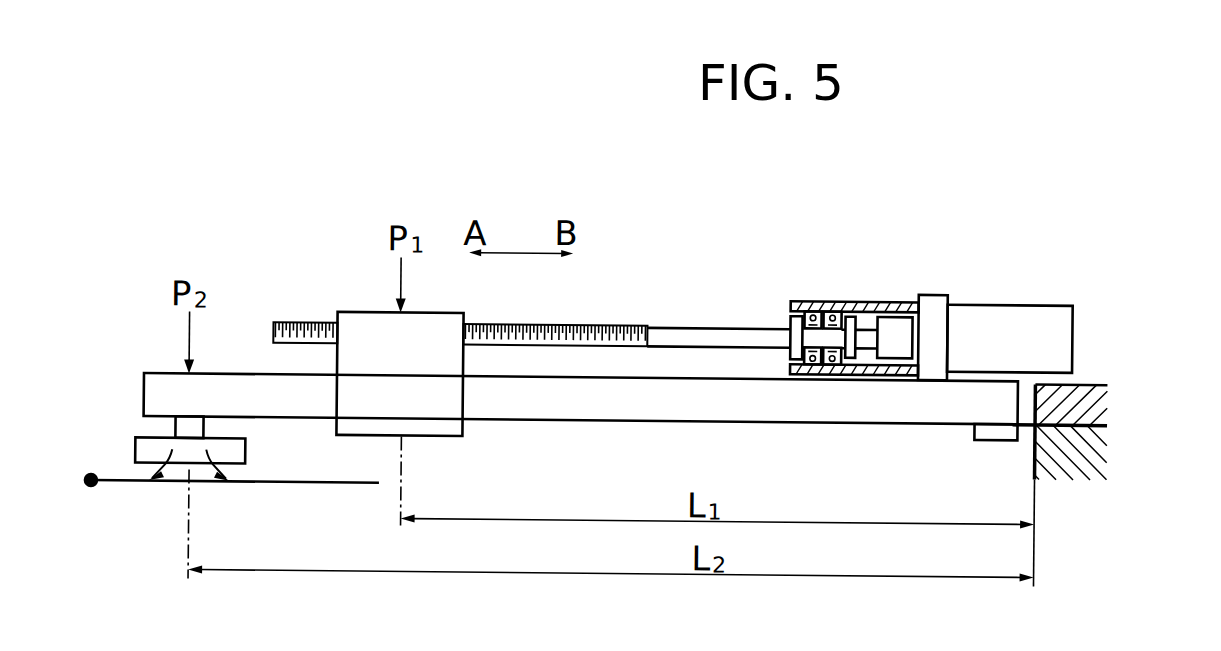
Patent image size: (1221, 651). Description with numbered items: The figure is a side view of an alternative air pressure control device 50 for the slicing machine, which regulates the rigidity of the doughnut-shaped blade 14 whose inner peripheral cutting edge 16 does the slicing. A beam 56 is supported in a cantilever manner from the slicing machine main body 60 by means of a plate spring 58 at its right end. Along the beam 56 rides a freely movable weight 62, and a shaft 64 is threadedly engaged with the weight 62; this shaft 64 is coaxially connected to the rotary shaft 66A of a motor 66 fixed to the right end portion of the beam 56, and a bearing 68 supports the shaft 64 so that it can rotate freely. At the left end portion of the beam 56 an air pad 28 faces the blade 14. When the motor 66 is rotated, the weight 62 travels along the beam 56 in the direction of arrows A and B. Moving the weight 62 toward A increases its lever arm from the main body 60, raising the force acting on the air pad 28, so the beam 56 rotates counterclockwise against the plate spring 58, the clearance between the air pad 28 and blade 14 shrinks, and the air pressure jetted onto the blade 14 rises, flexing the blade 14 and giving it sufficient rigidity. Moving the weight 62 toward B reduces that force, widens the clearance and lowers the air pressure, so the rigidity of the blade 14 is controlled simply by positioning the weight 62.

The blade 14 is at (130, 485).
The inner peripheral cutting edge 16 is at (92, 487).
The air pad 28 is at (152, 443).
The air pressure control device 50 is at (621, 290).
The beam 56 is at (638, 407).
The plate spring 58 is at (1028, 420).
The slicing machine main body 60 is at (1092, 398).
The weight 62 is at (447, 319).
The shaft 64 is at (671, 327).
The motor 66 is at (1009, 304).
The rotary shaft 66A is at (911, 311).
The bearing 68 is at (833, 298).